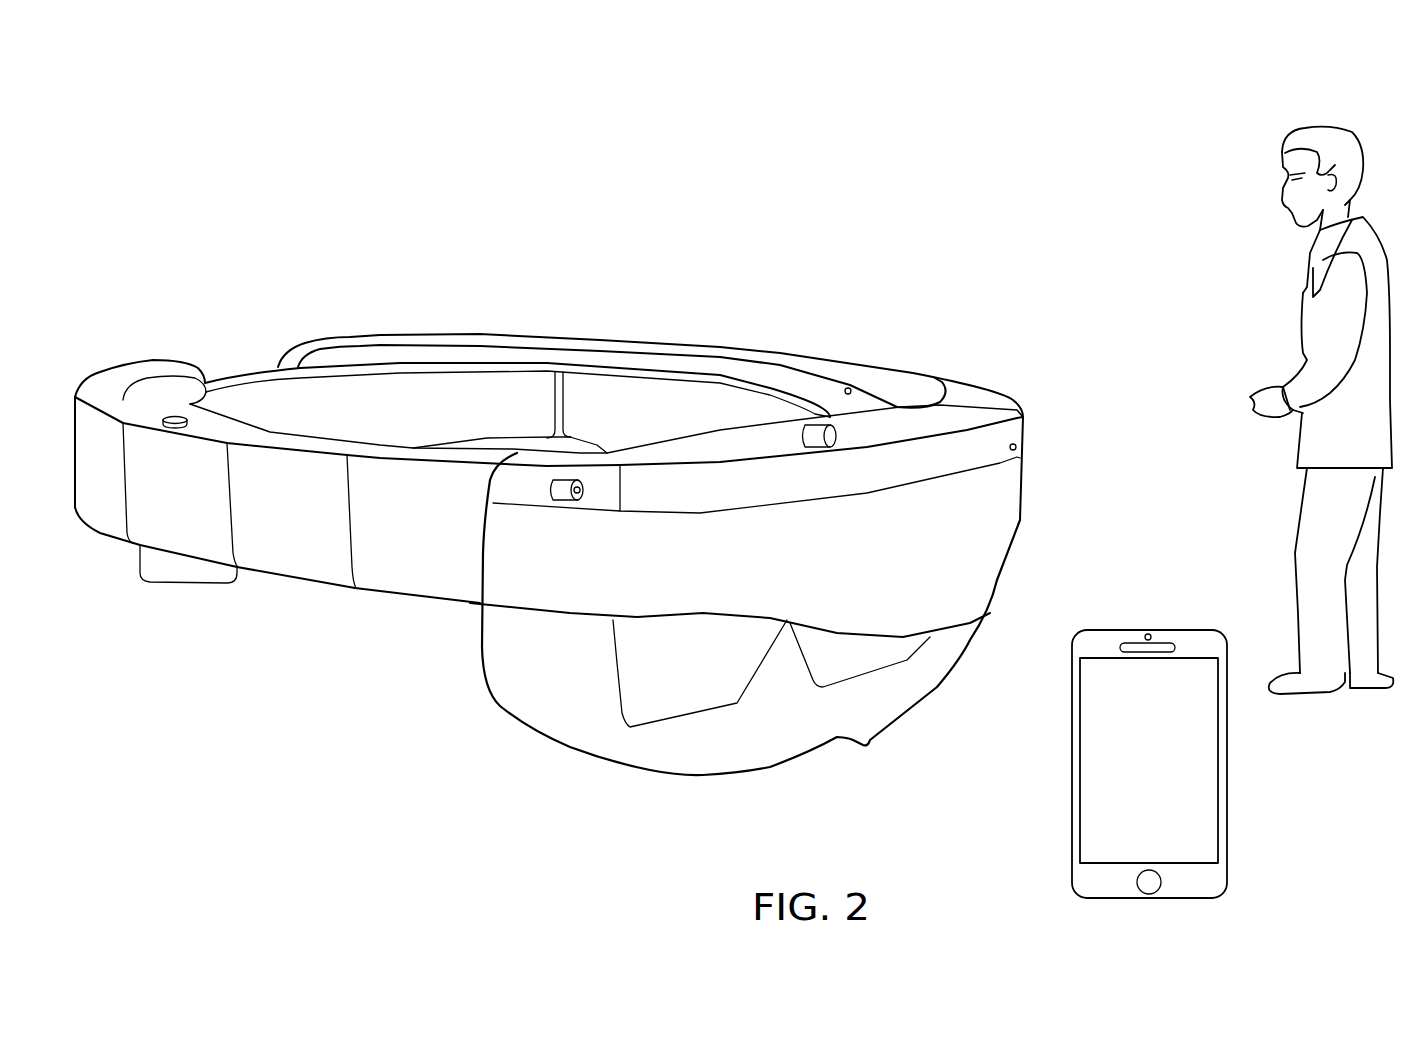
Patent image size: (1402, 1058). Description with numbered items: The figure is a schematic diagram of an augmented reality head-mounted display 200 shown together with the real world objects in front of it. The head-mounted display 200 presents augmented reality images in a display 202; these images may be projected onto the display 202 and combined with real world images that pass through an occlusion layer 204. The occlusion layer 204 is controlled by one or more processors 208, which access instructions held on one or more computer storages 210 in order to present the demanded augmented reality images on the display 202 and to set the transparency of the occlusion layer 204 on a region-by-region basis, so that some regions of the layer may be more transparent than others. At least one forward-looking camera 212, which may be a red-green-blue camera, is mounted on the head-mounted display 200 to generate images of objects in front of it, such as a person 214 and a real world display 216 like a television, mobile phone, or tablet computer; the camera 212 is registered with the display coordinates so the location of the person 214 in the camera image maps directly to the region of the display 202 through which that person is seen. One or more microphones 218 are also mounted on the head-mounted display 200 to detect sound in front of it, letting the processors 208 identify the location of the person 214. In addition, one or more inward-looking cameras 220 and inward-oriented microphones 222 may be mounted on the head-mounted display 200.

The head-mounted display 200 is at (201, 241).
The display 202 is at (630, 712).
The occlusion layer 204 is at (733, 718).
The processor 208 is at (188, 545).
The computer storage 210 is at (302, 570).
The camera 212 is at (558, 503).
The person 214 is at (1323, 130).
The real world display 216 is at (1150, 630).
The microphone 218 is at (1017, 447).
The inward-looking camera 220 is at (823, 448).
The inward-oriented microphone 222 is at (847, 386).